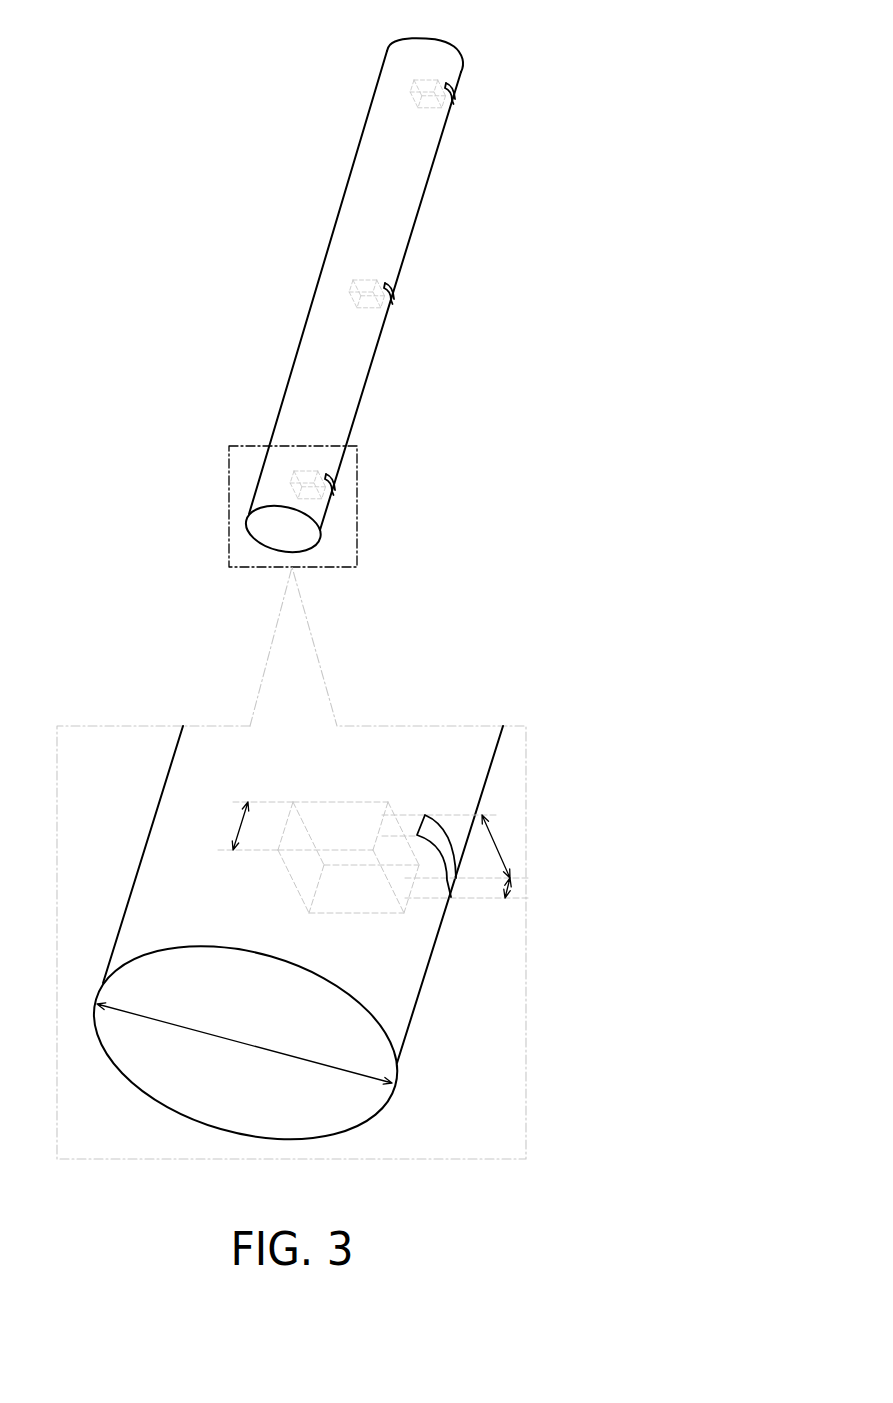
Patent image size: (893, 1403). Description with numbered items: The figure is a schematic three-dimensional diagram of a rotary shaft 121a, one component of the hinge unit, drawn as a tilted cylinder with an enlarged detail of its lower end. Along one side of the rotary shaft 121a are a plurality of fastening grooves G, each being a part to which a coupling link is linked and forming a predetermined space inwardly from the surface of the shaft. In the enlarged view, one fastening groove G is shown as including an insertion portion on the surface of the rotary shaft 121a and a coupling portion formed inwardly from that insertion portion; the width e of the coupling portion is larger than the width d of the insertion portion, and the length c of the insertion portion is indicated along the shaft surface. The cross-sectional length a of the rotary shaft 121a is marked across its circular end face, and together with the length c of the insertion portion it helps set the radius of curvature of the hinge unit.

The rotary shaft 121a is at (403, 188).
The fastening groove G is at (358, 802).
The cross-sectional length of the rotary shaft a is at (244, 1043).
The length of the insertion portion c is at (496, 846).
The width of the insertion portion d is at (508, 888).
The width of the coupling portion e is at (255, 826).